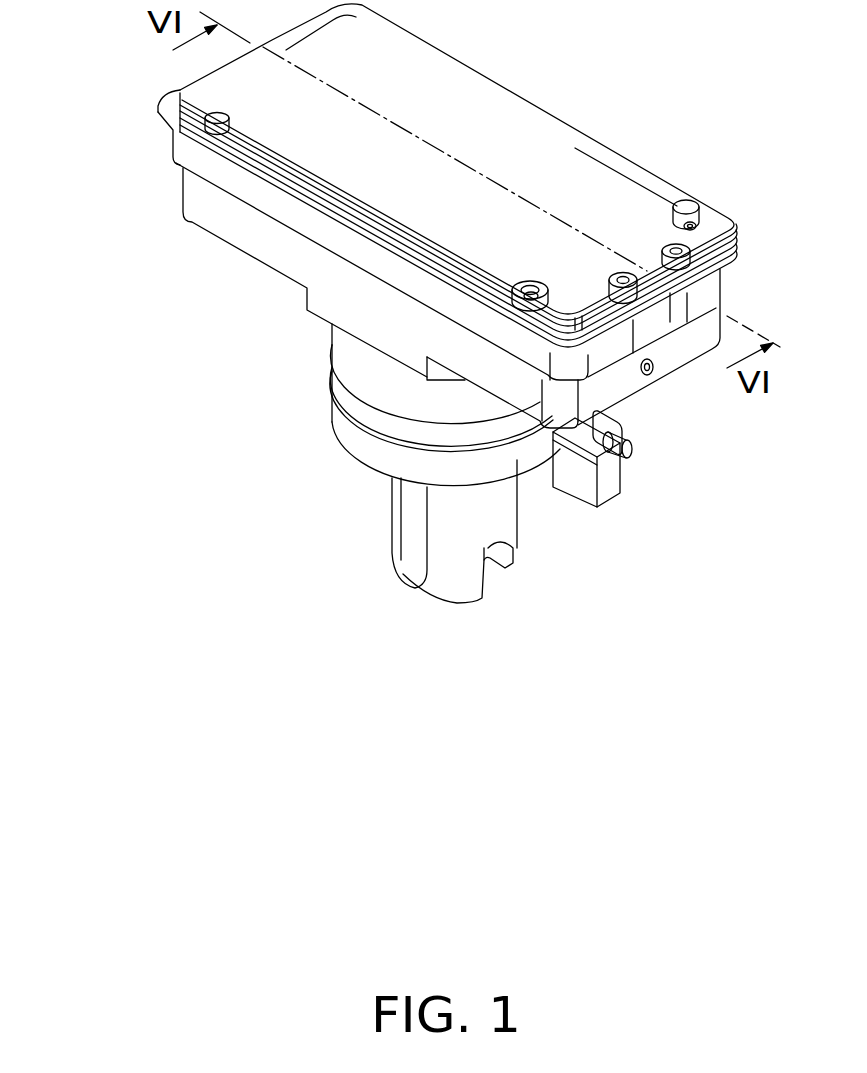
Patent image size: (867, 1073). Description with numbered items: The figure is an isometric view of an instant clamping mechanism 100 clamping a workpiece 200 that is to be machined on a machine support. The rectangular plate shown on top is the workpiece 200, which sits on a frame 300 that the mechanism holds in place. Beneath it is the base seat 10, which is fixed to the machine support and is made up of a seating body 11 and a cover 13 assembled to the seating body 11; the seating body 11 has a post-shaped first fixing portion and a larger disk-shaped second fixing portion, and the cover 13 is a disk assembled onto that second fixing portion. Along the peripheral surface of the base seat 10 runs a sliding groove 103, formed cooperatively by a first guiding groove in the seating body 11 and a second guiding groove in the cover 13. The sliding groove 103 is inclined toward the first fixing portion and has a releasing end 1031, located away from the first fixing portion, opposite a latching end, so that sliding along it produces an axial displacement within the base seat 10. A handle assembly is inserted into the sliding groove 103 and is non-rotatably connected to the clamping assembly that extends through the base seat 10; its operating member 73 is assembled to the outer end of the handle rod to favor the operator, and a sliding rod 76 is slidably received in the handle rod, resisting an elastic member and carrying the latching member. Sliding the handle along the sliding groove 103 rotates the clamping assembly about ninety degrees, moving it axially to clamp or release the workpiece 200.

The instant clamping mechanism 100 is at (422, 612).
The workpiece 200 is at (162, 108).
The frame 300 is at (228, 218).
The base seat 10 is at (233, 333).
The seating body 11 is at (357, 433).
The cover 13 is at (347, 358).
The releasing end 1031 is at (385, 440).
The sliding groove 103 is at (443, 420).
The operating member 73 is at (580, 487).
The sliding rod 76 is at (630, 448).